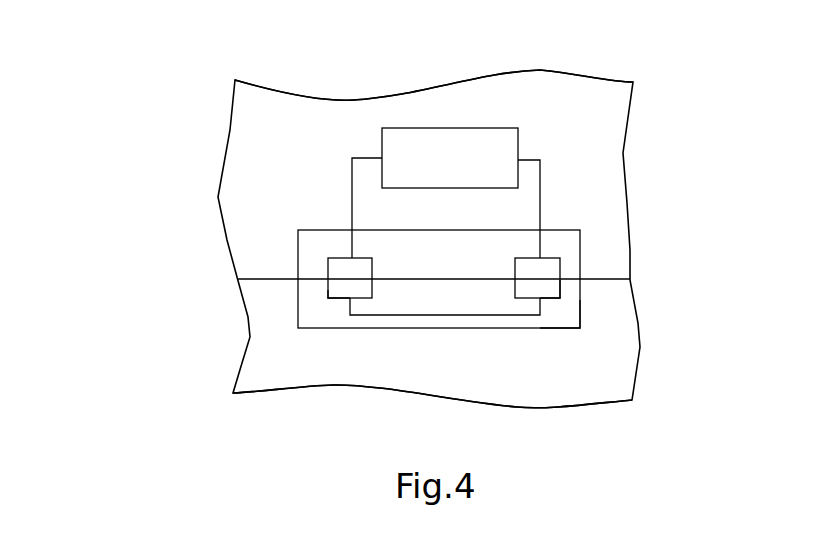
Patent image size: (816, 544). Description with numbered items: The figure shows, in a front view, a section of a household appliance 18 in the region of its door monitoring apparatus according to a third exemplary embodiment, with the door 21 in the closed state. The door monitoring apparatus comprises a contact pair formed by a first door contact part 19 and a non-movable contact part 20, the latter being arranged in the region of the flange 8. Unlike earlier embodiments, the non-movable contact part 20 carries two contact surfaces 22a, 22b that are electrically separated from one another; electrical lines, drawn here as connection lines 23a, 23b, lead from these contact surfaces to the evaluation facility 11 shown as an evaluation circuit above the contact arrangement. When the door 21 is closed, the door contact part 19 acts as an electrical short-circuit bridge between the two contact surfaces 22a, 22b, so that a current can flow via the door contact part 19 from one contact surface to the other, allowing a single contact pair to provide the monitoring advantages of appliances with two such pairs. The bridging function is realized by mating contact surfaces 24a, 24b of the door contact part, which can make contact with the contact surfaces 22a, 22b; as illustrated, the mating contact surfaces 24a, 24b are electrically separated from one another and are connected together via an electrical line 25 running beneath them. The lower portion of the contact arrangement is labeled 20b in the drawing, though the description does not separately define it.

The household appliance 18 is at (157, 107).
The flange 8 is at (630, 250).
The door 21 is at (637, 367).
The evaluation facility 11 is at (518, 142).
The connection line 23a is at (540, 177).
The connection line 23b is at (350, 168).
The contact surface 22a is at (550, 258).
The contact surface 22b is at (342, 255).
The non-movable contact part 20 is at (297, 253).
The sensor element part 20b is at (547, 305).
The door contact part 19 is at (293, 288).
The mating contact surface 24a is at (562, 288).
The mating contact surface 24b is at (342, 303).
The electrical line 25 is at (453, 315).